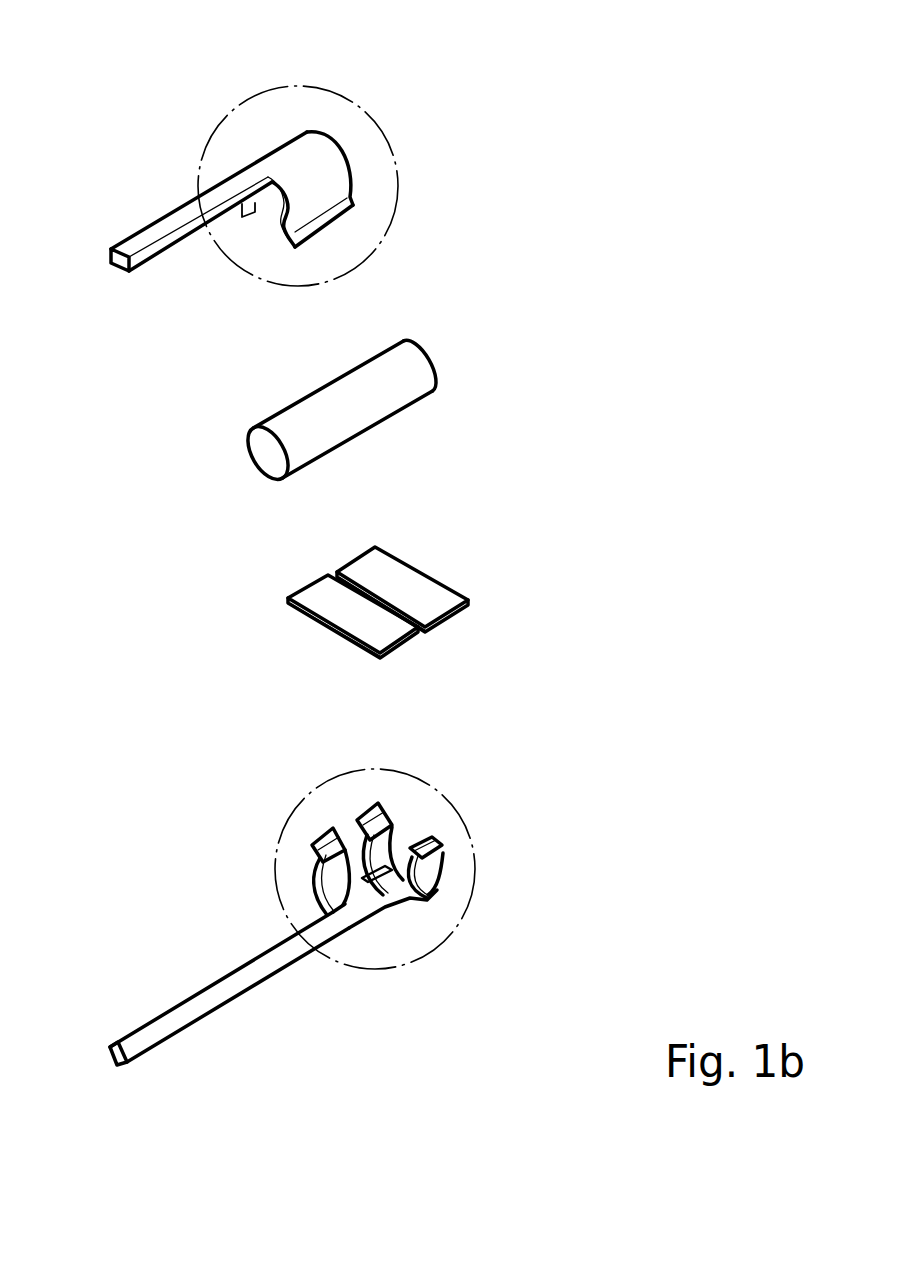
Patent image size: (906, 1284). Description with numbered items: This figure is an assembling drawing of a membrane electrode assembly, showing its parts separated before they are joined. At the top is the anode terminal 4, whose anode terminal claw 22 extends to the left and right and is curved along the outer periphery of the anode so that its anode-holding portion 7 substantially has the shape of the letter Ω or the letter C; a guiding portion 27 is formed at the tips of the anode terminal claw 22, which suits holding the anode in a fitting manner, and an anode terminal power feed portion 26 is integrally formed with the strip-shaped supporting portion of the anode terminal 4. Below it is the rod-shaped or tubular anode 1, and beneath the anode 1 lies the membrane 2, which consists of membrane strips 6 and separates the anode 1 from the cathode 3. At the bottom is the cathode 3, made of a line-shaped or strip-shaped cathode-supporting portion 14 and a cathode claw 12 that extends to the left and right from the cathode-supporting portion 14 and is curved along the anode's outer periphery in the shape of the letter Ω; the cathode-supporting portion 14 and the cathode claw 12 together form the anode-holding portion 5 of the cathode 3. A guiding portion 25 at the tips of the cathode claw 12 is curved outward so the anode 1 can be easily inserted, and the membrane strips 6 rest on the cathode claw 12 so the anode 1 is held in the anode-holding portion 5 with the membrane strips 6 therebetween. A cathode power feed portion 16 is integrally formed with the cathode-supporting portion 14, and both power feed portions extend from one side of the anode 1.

The anode 1 is at (578, 371).
The membrane 2 is at (578, 568).
The cathode 3 is at (578, 786).
The anode terminal 4 is at (578, 148).
The anode-holding portion 5 is at (468, 866).
The membrane strips 6 is at (417, 566).
The anode-holding portion 7 is at (348, 108).
The cathode claw 12 is at (377, 913).
The cathode-supporting portion 14 is at (348, 910).
The cathode power feed portion 16 is at (193, 1002).
The anode terminal claw 22 is at (337, 173).
The guiding portion 25 is at (367, 808).
The anode terminal power feed portion 26 is at (156, 223).
The guiding portion 27 is at (330, 228).